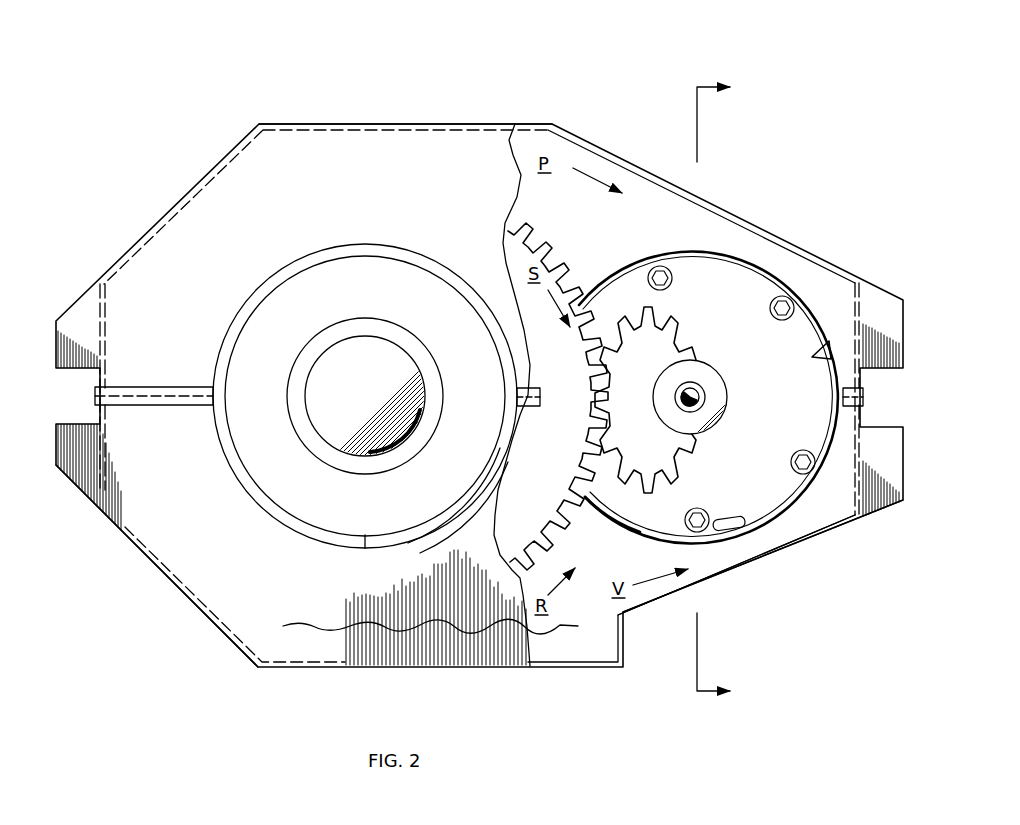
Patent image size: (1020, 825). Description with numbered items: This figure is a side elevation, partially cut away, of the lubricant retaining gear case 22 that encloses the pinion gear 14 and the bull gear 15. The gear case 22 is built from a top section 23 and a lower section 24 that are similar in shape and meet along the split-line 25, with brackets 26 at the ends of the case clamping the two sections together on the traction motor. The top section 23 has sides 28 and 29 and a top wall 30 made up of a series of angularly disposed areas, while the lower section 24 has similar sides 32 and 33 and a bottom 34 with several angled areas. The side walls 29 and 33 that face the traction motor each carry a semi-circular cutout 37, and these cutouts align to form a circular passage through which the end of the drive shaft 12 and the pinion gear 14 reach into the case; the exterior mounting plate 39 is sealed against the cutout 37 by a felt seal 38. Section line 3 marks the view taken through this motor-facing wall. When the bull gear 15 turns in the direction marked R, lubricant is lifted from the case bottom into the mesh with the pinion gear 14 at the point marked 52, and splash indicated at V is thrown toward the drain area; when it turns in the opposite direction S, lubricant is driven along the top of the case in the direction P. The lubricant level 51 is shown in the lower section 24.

The section line 3- 3 is at (728, 389).
The drive shaft 12 is at (694, 368).
The pinion gear 14 is at (659, 391).
The bull gear 15 is at (580, 350).
The gear case 22 is at (568, 98).
The top section 23 is at (345, 117).
The lower section 24 is at (210, 620).
The split-line 25 is at (180, 401).
The brackets 26 is at (77, 423).
The side 28 is at (355, 210).
The side 29 is at (554, 395).
The top wall 30 is at (185, 200).
The side 32 is at (278, 560).
The side 33 is at (787, 539).
The bottom 34 is at (738, 572).
The semi-circular cutout 37 is at (708, 386).
The felt seal 38 is at (828, 342).
The mounting plate 39 is at (678, 312).
The fluid level 51 is at (322, 626).
The lubricant lift into mesh 52 is at (610, 482).